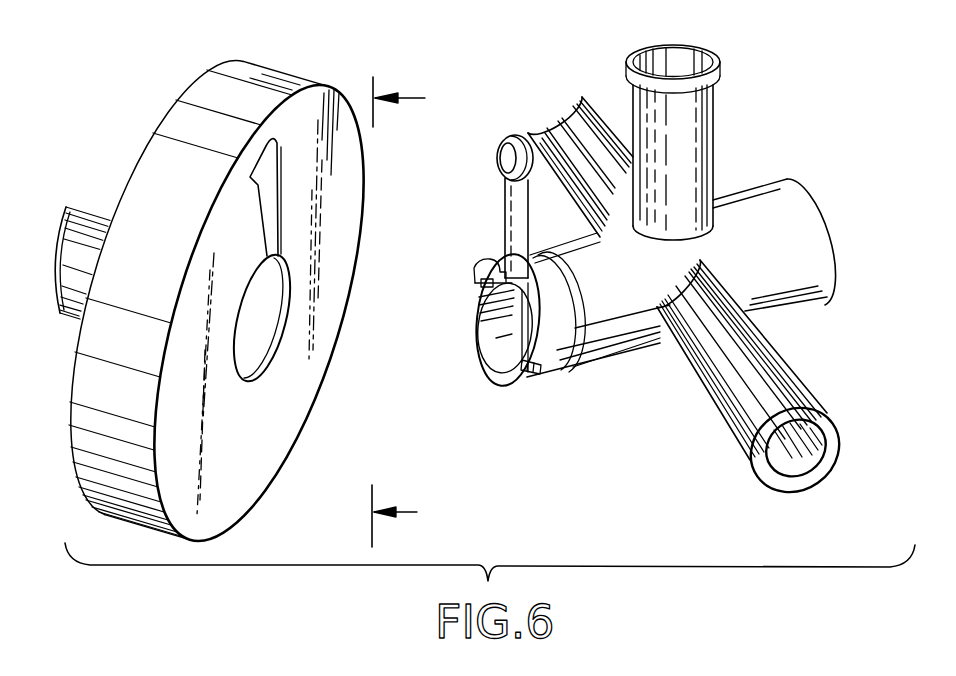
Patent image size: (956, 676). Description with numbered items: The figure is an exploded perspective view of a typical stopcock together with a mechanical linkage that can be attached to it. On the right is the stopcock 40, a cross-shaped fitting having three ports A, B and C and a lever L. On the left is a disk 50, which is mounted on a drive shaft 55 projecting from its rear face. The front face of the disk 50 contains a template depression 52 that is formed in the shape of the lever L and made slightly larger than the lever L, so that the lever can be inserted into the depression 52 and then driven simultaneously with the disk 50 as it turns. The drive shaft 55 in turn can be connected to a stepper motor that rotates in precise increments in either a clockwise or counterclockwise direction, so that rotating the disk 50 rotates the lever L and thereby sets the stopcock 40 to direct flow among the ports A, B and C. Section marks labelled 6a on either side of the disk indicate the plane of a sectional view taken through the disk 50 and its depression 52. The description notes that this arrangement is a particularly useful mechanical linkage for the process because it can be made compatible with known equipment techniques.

The disk 50 is at (216, 293).
The drive shaft 55 is at (84, 222).
The template depression 52 is at (282, 322).
The stopcock 40 is at (656, 271).
The port A is at (563, 107).
The port B is at (707, 125).
The port C is at (790, 380).
The lever L is at (500, 150).
The section line 6a is at (406, 310).